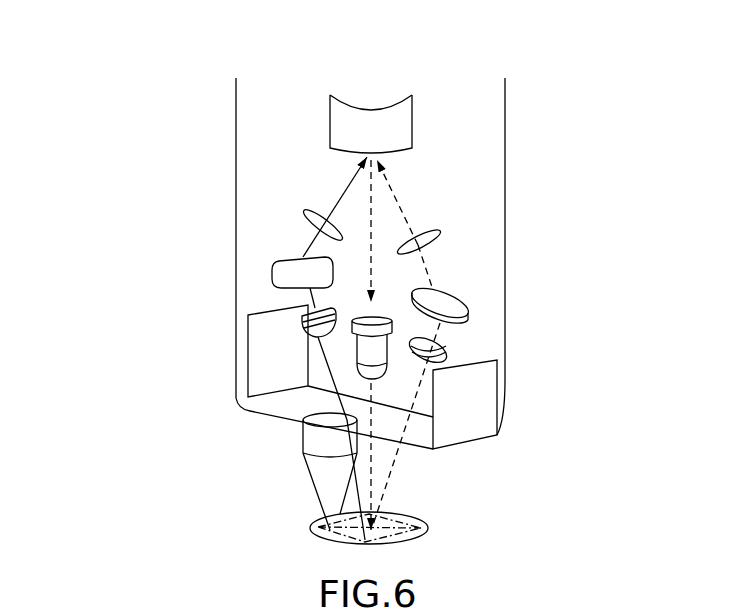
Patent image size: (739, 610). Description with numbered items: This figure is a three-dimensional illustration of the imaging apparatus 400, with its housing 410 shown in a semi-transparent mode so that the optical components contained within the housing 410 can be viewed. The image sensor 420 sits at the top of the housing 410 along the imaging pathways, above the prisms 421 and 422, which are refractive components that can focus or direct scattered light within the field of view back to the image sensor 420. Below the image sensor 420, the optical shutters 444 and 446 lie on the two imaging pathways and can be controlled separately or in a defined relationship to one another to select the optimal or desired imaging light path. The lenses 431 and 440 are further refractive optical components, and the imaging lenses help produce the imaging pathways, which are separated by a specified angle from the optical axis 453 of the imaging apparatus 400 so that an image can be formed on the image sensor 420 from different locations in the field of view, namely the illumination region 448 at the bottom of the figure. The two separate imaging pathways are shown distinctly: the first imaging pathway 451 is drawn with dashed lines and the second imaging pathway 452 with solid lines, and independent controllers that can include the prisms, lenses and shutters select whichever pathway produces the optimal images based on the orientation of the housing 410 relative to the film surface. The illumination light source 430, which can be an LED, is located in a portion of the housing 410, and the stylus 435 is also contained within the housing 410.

The imaging apparatus 400 is at (118, 63).
The housing 410 is at (233, 152).
The image sensor 420 is at (407, 132).
The prism 421 is at (474, 313).
The prism 422 is at (273, 272).
The light source 430 is at (360, 348).
The lens 431 is at (302, 328).
The stylus 435 is at (298, 493).
The lens 440 is at (444, 354).
The optical shutter 444 is at (443, 233).
The optical shutter 446 is at (303, 212).
The illumination region 448 is at (310, 530).
The imaging pathway 451 is at (388, 493).
The imaging pathway 452 is at (327, 386).
The optical axis 453 is at (374, 206).